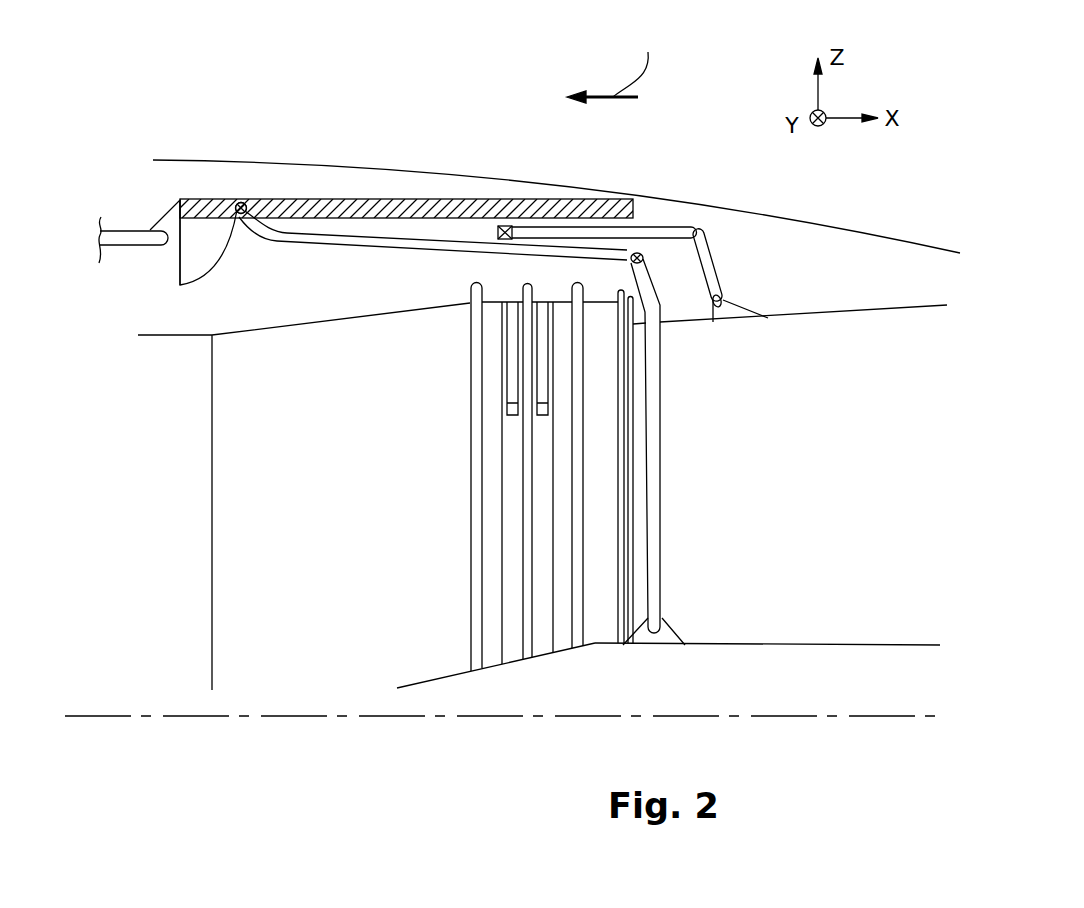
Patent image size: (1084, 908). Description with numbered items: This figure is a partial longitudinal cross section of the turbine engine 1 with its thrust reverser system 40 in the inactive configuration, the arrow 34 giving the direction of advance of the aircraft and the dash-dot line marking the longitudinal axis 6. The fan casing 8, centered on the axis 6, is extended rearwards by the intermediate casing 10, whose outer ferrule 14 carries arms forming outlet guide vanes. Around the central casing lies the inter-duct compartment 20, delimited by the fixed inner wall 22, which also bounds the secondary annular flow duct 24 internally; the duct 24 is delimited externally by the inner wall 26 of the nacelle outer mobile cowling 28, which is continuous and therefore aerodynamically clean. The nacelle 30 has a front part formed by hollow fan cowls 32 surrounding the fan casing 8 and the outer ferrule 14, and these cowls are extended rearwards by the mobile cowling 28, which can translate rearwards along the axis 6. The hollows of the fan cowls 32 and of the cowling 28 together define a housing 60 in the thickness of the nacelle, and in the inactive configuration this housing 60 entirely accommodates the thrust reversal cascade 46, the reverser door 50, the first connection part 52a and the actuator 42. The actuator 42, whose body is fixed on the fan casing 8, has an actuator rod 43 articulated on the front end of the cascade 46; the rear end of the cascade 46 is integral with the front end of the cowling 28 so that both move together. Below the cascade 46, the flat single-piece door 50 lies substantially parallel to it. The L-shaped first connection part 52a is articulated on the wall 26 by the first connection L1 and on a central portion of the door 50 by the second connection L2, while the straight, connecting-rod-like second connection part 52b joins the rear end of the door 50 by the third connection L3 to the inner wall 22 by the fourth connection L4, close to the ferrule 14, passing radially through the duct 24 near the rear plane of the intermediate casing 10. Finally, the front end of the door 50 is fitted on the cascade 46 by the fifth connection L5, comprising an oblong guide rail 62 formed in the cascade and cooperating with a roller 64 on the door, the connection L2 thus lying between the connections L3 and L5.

The turbine engine 1 is at (189, 93).
The longitudinal axis 6 is at (277, 718).
The fan casing 8 is at (300, 470).
The intermediate casing 10 is at (503, 705).
The outer ferrule 14 is at (562, 300).
The inter-duct compartment 20 is at (812, 672).
The inner wall 22 is at (785, 645).
The secondary annular flow duct 24 is at (817, 487).
The inner wall of the secondary flow duct 26 is at (853, 312).
The nacelle outer mobile cowling 28 is at (917, 240).
The nacelle 30 is at (419, 162).
The fan cowls 32 is at (190, 158).
The arrow 34 is at (613, 64).
The thrust reverser system 40 is at (461, 185).
The actuator 42 is at (76, 227).
The actuator rod 43 is at (128, 240).
The thrust reversal cascade 46 is at (357, 205).
The reverser door 50 is at (423, 248).
The first connection part 52a is at (684, 220).
The second connection part 52b is at (674, 455).
The housing 60 is at (338, 192).
The guide rail 62 is at (282, 197).
The roller 64 is at (221, 198).
The first articulated connection L1 is at (721, 275).
The second articulated connection L2 is at (504, 225).
The third articulated connection L3 is at (643, 257).
The fourth articulated connection L4 is at (663, 616).
The fifth connection L5 is at (244, 202).